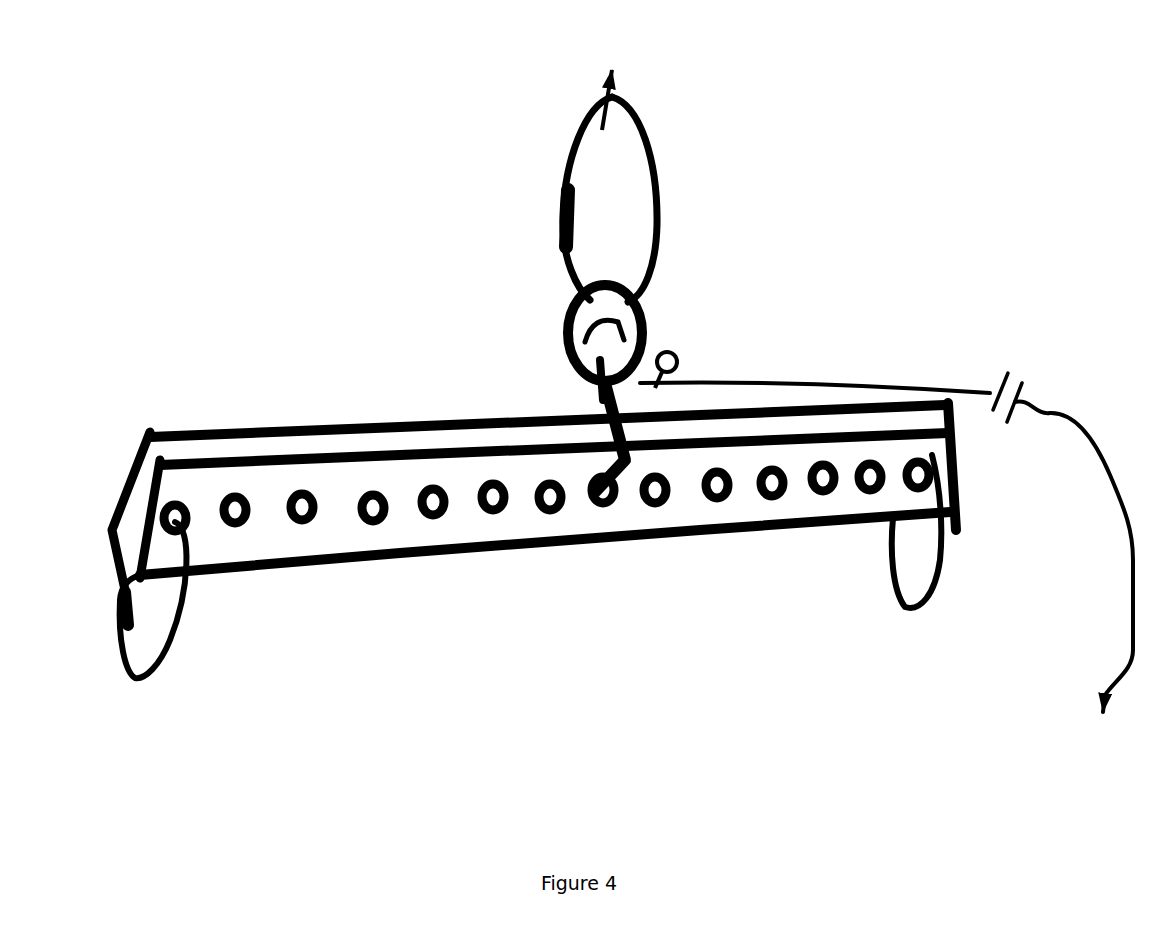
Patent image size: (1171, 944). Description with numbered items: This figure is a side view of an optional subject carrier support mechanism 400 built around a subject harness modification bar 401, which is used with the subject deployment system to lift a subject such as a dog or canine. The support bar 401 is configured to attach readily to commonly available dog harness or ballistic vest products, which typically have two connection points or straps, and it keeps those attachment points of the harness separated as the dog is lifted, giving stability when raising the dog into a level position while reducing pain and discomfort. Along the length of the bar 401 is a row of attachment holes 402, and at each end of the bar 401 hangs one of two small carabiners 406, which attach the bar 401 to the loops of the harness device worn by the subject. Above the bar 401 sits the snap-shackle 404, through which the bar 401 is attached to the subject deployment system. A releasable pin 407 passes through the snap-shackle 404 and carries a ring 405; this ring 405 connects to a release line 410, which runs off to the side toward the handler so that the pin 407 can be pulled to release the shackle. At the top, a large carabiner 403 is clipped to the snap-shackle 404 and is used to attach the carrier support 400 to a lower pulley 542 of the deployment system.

The subject carrier support mechanism 400 is at (288, 216).
The subject harness modification bar 401 is at (322, 417).
The Attachment Holes 402 is at (304, 523).
The large carabiner 403 is at (665, 200).
The snap-shackle 404 is at (648, 321).
The ring 405 is at (680, 355).
The small carabiners 406 is at (158, 689).
The releasable pin 407 is at (573, 385).
The release line 410 is at (1122, 575).
The lower pulley 542 is at (461, 80).